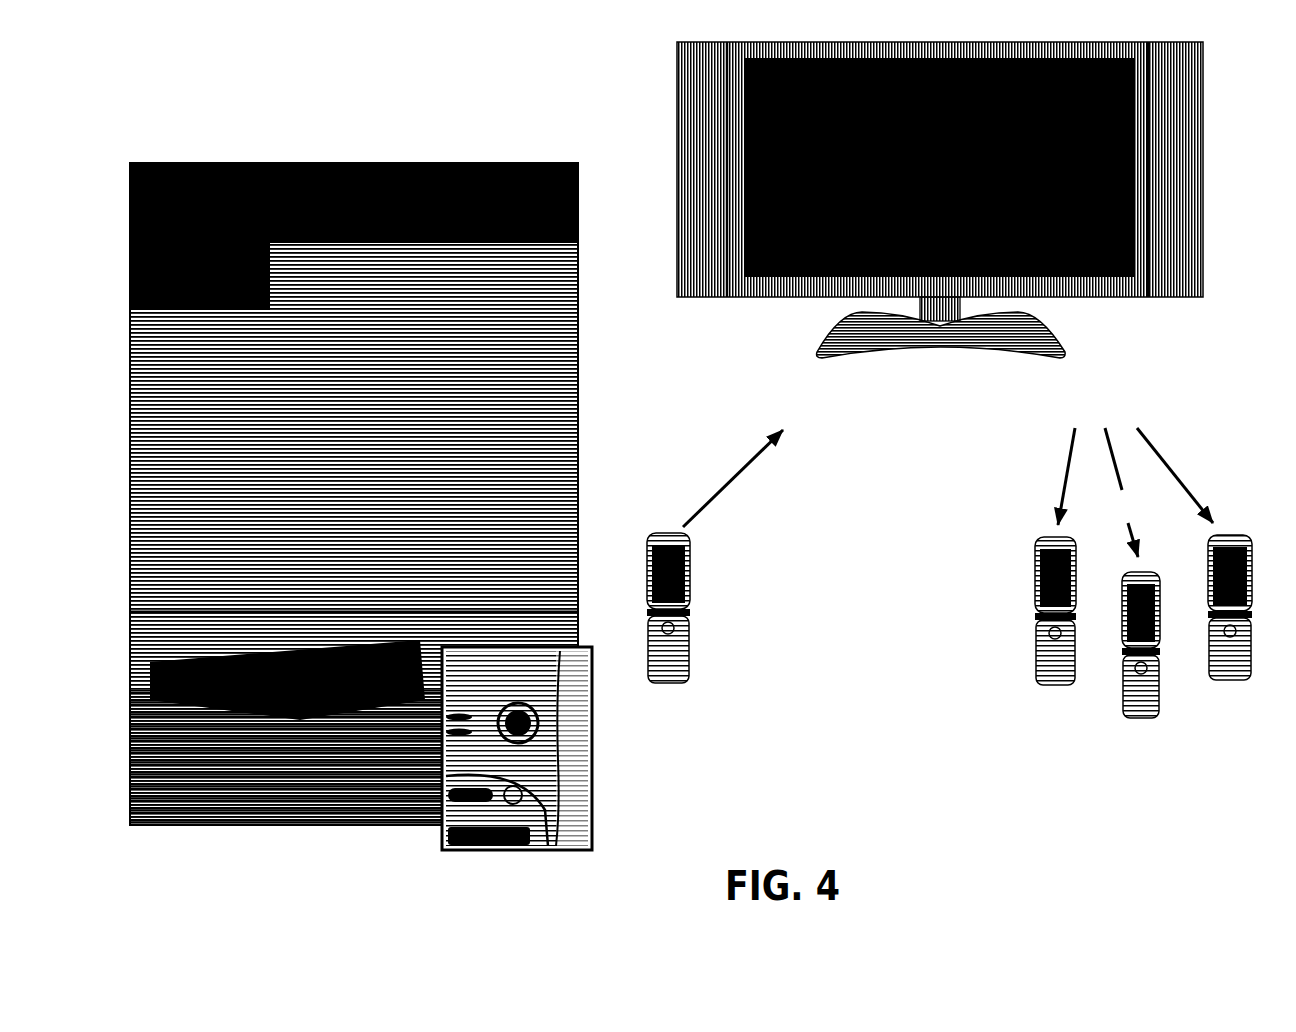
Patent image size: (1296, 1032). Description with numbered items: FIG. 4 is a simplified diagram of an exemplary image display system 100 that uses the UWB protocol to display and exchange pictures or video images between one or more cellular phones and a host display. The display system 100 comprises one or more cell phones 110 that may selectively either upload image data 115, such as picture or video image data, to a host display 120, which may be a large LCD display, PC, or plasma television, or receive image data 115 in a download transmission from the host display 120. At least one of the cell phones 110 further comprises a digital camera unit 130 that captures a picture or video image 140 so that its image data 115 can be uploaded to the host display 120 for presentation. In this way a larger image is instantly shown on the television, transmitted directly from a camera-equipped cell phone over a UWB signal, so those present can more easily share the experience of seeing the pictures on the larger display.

The image display system 100 is at (456, 55).
The cell phones 110 is at (688, 622).
The image data 115 is at (740, 468).
The host display 120 is at (756, 42).
The digital camera unit 130 is at (537, 733).
The picture or video image 140 is at (410, 163).